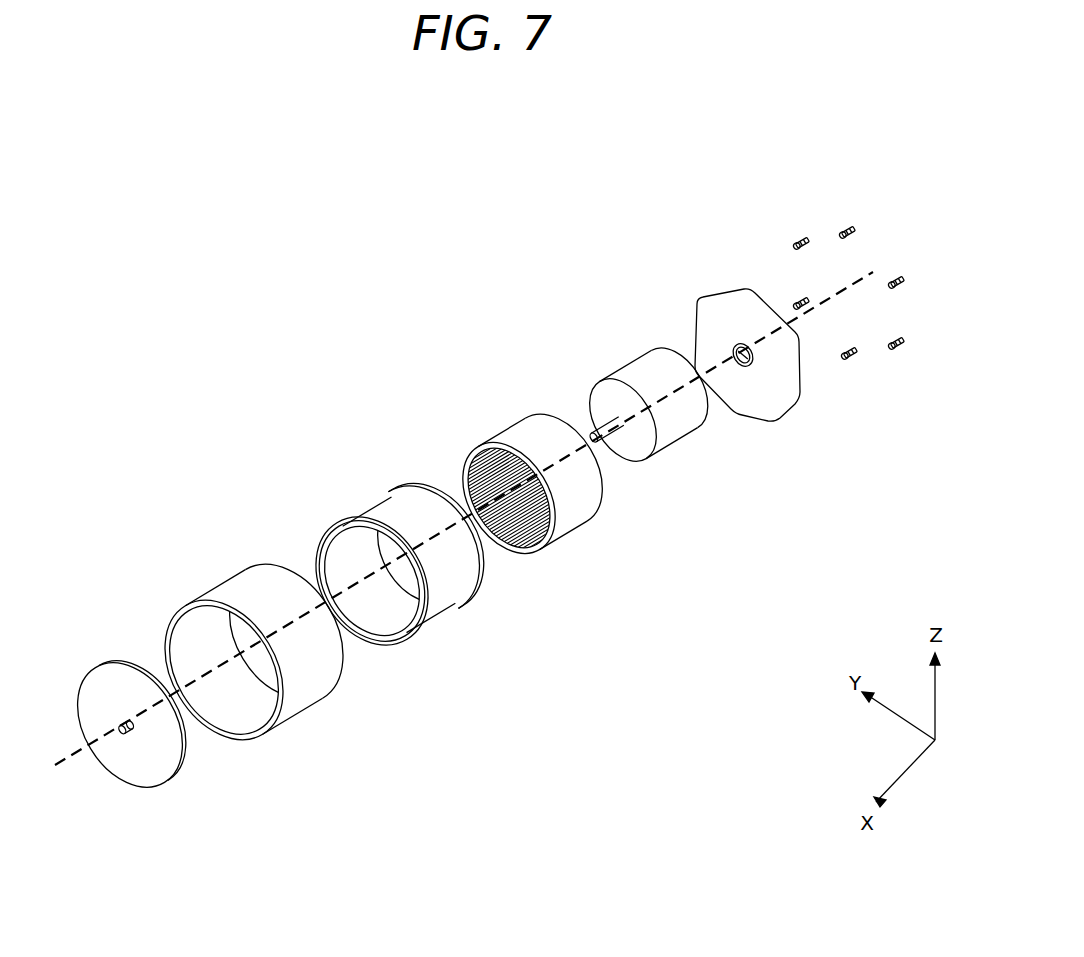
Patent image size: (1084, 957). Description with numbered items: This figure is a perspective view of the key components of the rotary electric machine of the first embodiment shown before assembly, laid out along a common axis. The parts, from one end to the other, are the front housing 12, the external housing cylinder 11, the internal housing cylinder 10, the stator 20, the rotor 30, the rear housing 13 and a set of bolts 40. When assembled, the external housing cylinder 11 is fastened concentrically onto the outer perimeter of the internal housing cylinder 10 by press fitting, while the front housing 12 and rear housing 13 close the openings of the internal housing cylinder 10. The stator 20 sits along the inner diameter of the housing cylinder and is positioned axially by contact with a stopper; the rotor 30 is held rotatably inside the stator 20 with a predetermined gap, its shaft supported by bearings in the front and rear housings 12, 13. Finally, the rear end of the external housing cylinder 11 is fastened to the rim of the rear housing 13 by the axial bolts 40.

The internal housing cylinder 10 is at (353, 517).
The external housing cylinder 11 is at (240, 597).
The front housing 12 is at (112, 673).
The rear housing 13 is at (715, 320).
The stator 20 is at (535, 427).
The rotor 30 is at (653, 387).
The bolt 40 is at (928, 227).